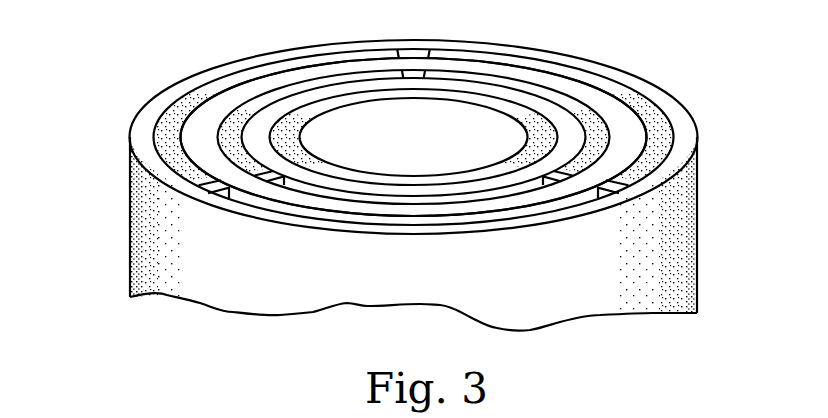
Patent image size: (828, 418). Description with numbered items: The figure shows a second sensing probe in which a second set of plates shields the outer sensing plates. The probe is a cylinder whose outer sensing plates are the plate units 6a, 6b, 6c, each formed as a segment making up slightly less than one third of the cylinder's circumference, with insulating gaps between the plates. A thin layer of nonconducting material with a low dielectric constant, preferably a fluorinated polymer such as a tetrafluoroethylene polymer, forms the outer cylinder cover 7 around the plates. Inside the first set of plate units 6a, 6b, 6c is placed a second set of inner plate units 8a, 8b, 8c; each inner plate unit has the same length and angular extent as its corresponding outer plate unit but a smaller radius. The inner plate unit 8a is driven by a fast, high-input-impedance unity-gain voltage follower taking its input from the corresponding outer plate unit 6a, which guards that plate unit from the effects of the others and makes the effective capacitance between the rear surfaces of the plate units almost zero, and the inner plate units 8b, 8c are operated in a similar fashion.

The plate unit 6a is at (623, 90).
The plate unit 6b is at (435, 222).
The plate unit 6c is at (152, 130).
The outer cylinder cover 7 is at (683, 148).
The inner plate unit 8a is at (513, 88).
The inner plate unit 8b is at (267, 180).
The inner plate unit 8c is at (332, 82).